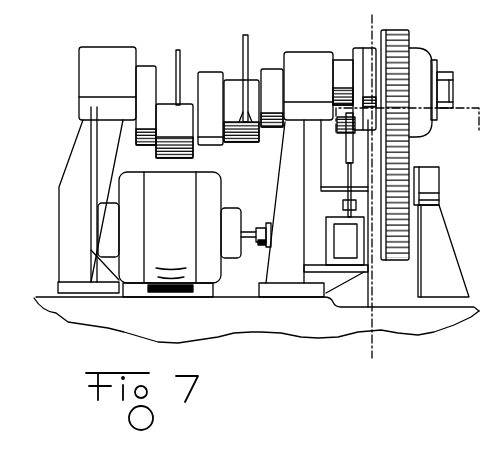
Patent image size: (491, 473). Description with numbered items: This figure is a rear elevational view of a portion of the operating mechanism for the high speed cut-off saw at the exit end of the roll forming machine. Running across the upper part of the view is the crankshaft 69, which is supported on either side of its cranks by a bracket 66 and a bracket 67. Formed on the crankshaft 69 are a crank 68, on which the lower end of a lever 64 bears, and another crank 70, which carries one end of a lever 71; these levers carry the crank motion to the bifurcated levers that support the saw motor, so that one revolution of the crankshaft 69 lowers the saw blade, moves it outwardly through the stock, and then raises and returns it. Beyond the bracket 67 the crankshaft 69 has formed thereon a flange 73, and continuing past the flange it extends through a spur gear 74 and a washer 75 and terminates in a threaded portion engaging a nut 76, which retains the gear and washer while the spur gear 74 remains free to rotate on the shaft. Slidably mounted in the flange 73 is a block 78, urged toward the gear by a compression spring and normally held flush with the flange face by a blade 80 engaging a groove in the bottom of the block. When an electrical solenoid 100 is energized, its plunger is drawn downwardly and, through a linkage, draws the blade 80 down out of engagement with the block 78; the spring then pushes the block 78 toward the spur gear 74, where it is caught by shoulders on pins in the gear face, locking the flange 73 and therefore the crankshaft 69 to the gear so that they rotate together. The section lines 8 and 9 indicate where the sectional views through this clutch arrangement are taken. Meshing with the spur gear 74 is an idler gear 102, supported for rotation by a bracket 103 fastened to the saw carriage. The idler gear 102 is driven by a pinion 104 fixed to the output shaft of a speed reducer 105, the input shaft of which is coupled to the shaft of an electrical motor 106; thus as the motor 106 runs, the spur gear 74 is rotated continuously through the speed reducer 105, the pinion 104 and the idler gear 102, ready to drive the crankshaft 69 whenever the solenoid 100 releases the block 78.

The section line 8- 8 is at (371, 15).
The section line 9- 9 is at (407, 135).
The lever 64 is at (248, 46).
The bracket 66 is at (72, 158).
The bracket 67 is at (293, 178).
The crank 68 is at (253, 141).
The crankshaft 69 is at (142, 66).
The crank 70 is at (156, 157).
The lever 71 is at (179, 58).
The flange 73 is at (362, 54).
The spur gear 74 is at (407, 32).
The washer 75 is at (434, 61).
The nut 76 is at (453, 78).
The block 78 is at (343, 127).
The blade 80 is at (345, 142).
The electrical solenoid 100 is at (368, 278).
The idler gear 102 is at (415, 150).
The bracket 103 is at (442, 220).
The pinion 104 is at (353, 258).
The speed reducer 105 is at (330, 200).
The electrical motor 106 is at (210, 268).